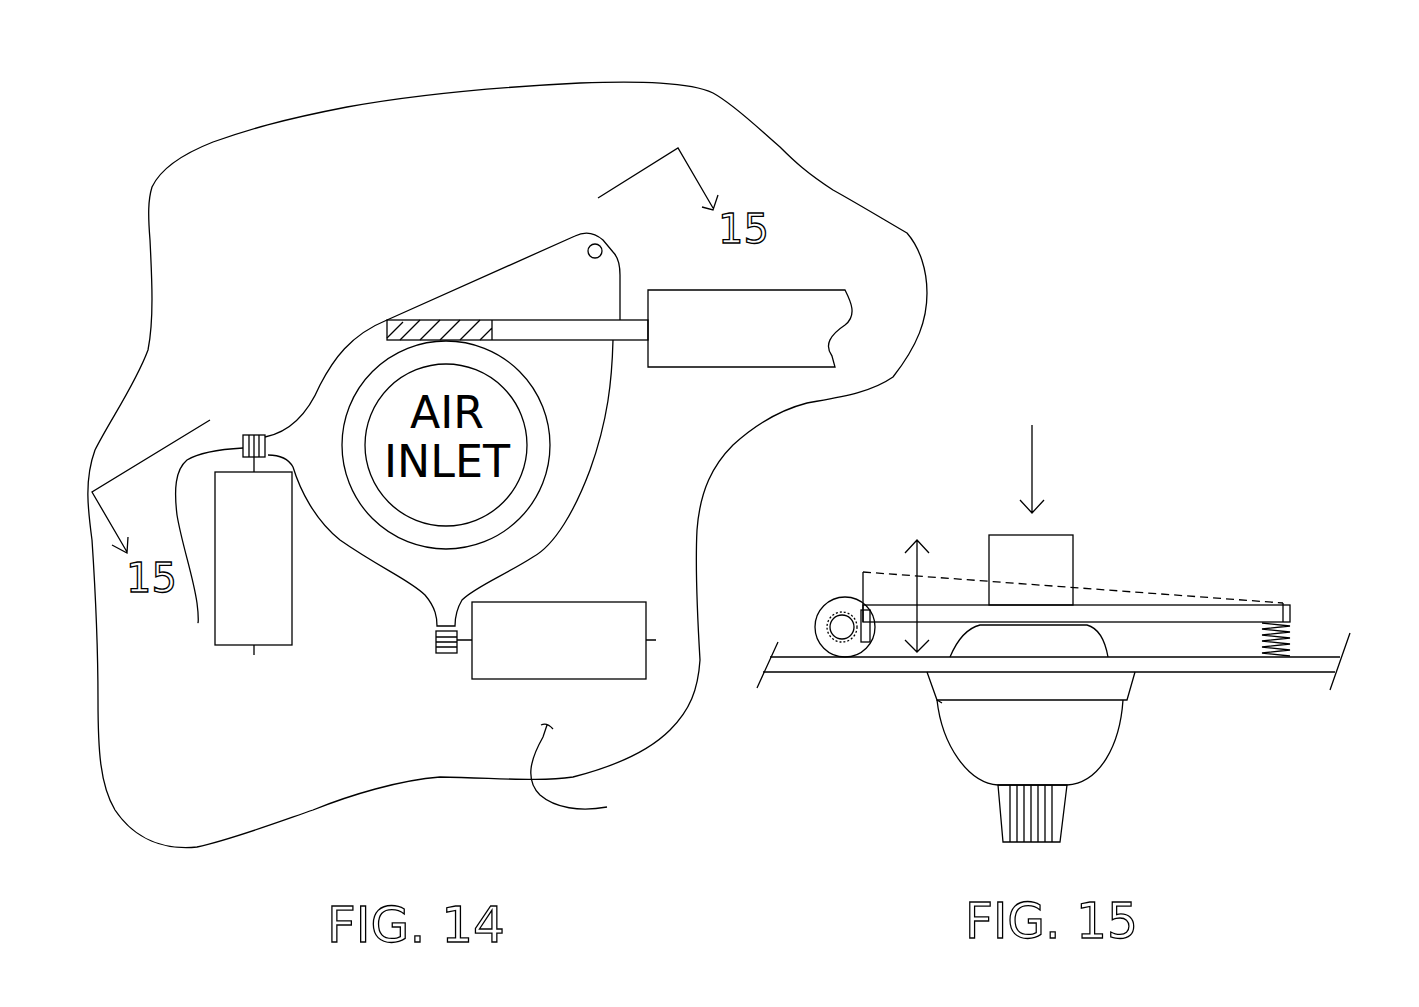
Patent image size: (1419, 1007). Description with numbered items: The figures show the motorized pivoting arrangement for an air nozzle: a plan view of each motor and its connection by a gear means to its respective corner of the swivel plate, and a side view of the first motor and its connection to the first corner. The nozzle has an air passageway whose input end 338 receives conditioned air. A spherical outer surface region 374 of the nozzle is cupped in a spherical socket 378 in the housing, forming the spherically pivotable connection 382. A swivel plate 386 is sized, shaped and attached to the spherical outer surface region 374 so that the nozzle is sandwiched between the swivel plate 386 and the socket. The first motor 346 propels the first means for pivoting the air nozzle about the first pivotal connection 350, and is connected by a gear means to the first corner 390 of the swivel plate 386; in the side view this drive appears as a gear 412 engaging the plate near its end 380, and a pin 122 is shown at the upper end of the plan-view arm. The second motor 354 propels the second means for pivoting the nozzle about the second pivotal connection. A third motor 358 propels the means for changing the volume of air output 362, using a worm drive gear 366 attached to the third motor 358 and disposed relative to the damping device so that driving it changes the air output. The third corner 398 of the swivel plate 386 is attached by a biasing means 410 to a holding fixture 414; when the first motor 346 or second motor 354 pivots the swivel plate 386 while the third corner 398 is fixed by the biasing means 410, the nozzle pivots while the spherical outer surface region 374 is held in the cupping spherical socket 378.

In FIG. 14, the pivot pin 122 is at (603, 251).
In FIG. 15, the input end 338 is at (1058, 535).
In FIG. 14, the first motor 346 is at (213, 640).
In FIG. 15, the first motor 346 is at (826, 597).
In FIG. 14, the first means for pivoting the air nozzle about the first pivotal connection 350 is at (198, 622).
In FIG. 14, the second motor 354 is at (630, 680).
In FIG. 14, the third motor 358 is at (812, 290).
In FIG. 14, the means for changing the volume of air output 362 is at (410, 320).
In FIG. 14, the worm drive gear 366 is at (475, 320).
In FIG. 15, the spherical outer surface region 374 is at (1097, 763).
In FIG. 15, the spherical socket 378 is at (1133, 673).
In FIG. 15, the lever end 380 is at (883, 617).
In FIG. 15, the spherically pivotable connection 382 is at (942, 703).
In FIG. 14, the swivel plate 386 is at (387, 313).
In FIG. 15, the swivel plate 386 is at (1167, 605).
In FIG. 14, the first corner 390 is at (272, 437).
In FIG. 14, the third corner 398 is at (583, 234).
In FIG. 15, the third corner 398 is at (1283, 603).
In FIG. 15, the biasing means 410 is at (1293, 635).
In FIG. 15, the gear 412 is at (829, 616).
In FIG. 14, the holding fixture 414 is at (594, 773).
In FIG. 15, the holding fixture 414 is at (1243, 673).